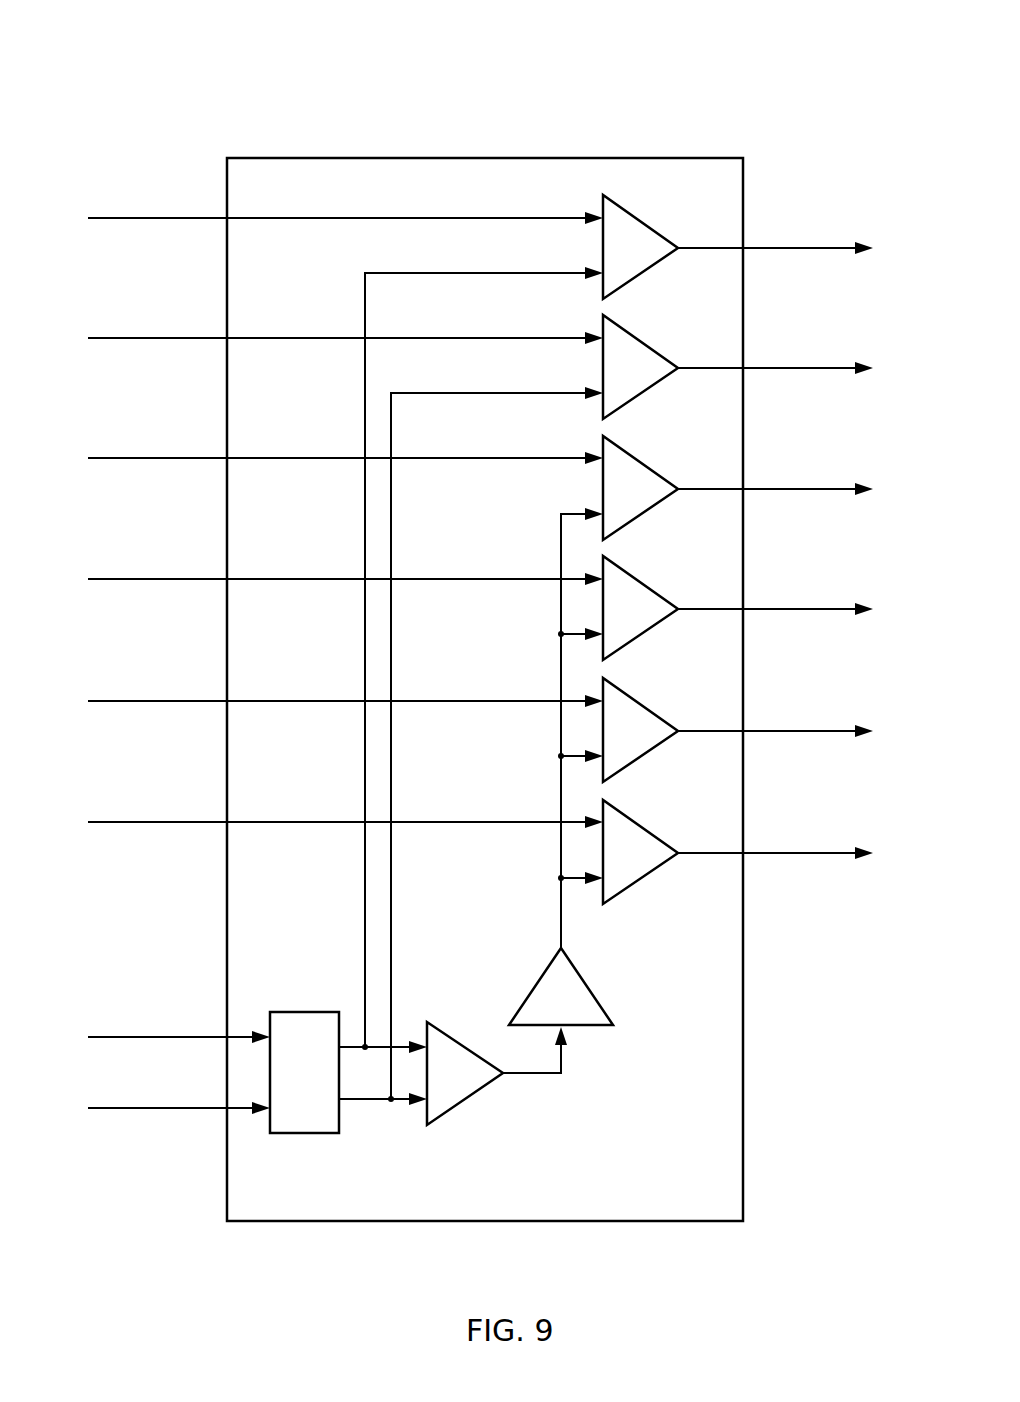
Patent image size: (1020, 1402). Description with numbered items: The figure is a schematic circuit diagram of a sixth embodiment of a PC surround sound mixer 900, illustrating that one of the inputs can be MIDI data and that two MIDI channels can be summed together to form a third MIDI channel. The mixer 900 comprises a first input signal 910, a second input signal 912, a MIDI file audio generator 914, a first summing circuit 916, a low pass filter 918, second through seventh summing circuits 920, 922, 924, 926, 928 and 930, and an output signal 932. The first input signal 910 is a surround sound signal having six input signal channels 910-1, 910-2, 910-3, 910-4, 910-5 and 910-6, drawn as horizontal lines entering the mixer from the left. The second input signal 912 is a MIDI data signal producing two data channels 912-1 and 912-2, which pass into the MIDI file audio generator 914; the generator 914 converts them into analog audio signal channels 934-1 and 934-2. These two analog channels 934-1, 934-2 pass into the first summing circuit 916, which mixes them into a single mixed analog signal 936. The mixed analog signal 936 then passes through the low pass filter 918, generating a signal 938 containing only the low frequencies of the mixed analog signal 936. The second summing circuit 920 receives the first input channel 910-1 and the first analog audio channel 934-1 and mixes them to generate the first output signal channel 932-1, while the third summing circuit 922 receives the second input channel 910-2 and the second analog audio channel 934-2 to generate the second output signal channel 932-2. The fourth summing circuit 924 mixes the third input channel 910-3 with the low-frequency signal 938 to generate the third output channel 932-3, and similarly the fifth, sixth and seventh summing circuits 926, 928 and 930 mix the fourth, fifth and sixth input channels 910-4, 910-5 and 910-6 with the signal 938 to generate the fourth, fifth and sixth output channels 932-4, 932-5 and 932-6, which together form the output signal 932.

The PC surround sound mixer 900 is at (700, 112).
The first input signal 910 is at (142, 124).
The first input signal channel 910-1 is at (165, 216).
The second input signal channel 910-2 is at (165, 336).
The third input signal channel 910-3 is at (165, 456).
The fourth input signal channel 910-4 is at (165, 577).
The fifth input signal channel 910-5 is at (165, 699).
The sixth input signal channel 910-6 is at (165, 820).
The second input signal 912 is at (108, 1222).
The first MIDI data channel 912-1 is at (157, 1035).
The second MIDI data channel 912-2 is at (150, 1110).
The MIDI file audio generator 914 is at (285, 1140).
The first summing circuit 916 is at (440, 1130).
The low pass filter 918 is at (598, 1007).
The second summing circuit 920 is at (637, 226).
The third summing circuit 922 is at (637, 346).
The fourth summing circuit 924 is at (637, 467).
The fifth summing circuit 926 is at (637, 587).
The sixth summing circuit 928 is at (637, 709).
The seventh summing circuit 930 is at (637, 831).
The output signal 932 is at (830, 910).
The first output signal channel 932-1 is at (798, 246).
The second output signal channel 932-2 is at (798, 366).
The third output signal channel 932-3 is at (798, 487).
The fourth output signal channel 932-4 is at (798, 607).
The fifth output signal channel 932-5 is at (798, 729).
The sixth output signal channel 932-6 is at (798, 851).
The first analog audio signal channel 934-1 is at (365, 868).
The second analog audio signal channel 934-2 is at (391, 900).
The mixed analog signal 936 is at (562, 1062).
The low frequency signal 938 is at (562, 935).